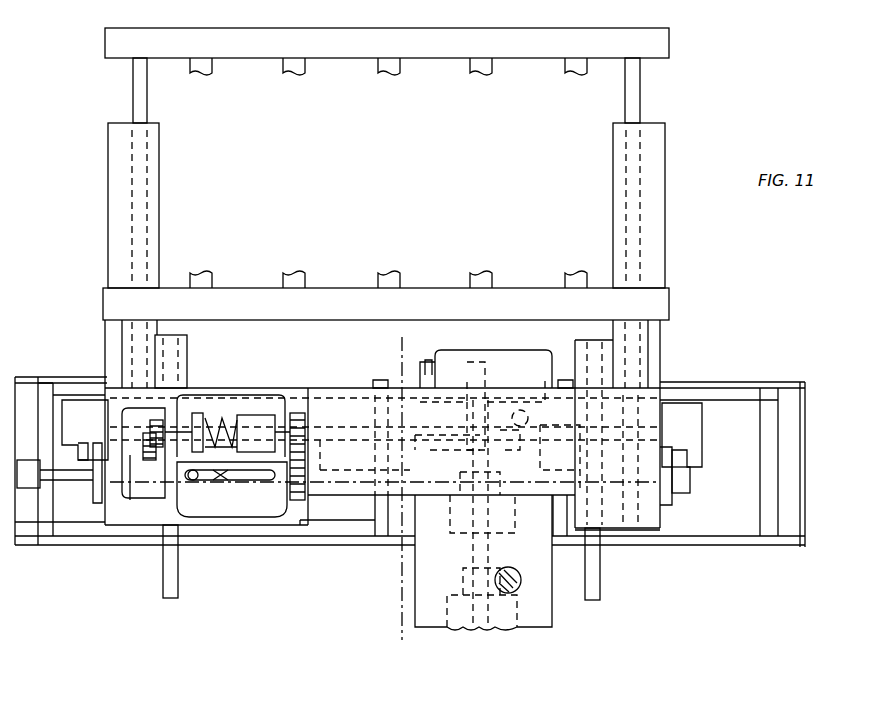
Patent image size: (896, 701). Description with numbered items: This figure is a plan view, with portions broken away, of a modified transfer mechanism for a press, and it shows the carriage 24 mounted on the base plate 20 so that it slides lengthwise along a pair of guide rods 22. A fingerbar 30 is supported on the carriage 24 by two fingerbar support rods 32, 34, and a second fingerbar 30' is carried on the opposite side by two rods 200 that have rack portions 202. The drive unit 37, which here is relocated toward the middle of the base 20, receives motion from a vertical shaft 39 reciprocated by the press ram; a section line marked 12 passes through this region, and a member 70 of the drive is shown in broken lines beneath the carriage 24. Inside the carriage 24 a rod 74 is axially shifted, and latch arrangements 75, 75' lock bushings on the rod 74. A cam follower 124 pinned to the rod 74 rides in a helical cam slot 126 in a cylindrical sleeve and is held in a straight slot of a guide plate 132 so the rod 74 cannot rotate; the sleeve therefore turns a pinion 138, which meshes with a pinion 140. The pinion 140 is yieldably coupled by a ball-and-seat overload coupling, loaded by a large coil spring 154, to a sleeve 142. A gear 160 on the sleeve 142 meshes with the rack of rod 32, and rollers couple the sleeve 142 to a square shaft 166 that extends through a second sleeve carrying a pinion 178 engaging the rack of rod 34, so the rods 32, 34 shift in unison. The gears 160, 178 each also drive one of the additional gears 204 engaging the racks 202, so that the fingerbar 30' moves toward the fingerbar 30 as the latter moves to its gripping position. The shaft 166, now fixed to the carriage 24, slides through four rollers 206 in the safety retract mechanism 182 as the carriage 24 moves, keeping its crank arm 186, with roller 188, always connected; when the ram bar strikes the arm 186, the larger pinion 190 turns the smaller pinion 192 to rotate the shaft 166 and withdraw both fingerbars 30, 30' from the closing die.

The section line 12 is at (400, 337).
The base plate 20 is at (745, 383).
The guide rods 22 is at (62, 386).
The carriage 24 is at (271, 379).
The fingerbar 30 is at (386, 285).
The second fingerbar 30' is at (387, 66).
The fingerbar support rod 32 is at (176, 327).
The fingerbar support rod 34 is at (590, 338).
The drive unit 37 is at (568, 622).
The vertical shaft 39 is at (521, 577).
The shaft 70 is at (496, 497).
The rod 74 is at (325, 470).
The latch arrangement 75 is at (701, 489).
The latch arrangement 75' is at (59, 481).
The cam follower 124 is at (193, 481).
The cam slot 126 is at (221, 480).
The guide plate 132 is at (278, 520).
The pinion 138 is at (310, 520).
The pinion 140 is at (297, 412).
The sleeve 142 is at (194, 420).
The coil spring 154 is at (226, 424).
The gear 160 is at (152, 428).
The square shaft 166 is at (416, 450).
The pinion 178 is at (578, 448).
The safety retract mechanism 182 is at (482, 344).
The crank arm 186 is at (428, 386).
The roller 188 is at (428, 366).
The larger pinion 190 is at (500, 372).
The smaller pinion 192 is at (462, 420).
The rods 200 is at (147, 94).
The rack portions 202 is at (130, 448).
The gear means 204 is at (133, 500).
The rollers 206 is at (526, 416).